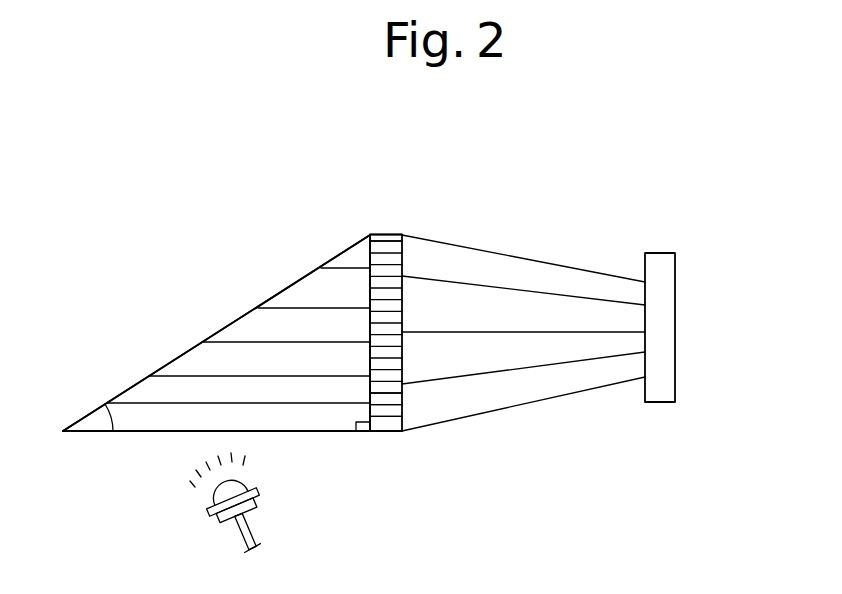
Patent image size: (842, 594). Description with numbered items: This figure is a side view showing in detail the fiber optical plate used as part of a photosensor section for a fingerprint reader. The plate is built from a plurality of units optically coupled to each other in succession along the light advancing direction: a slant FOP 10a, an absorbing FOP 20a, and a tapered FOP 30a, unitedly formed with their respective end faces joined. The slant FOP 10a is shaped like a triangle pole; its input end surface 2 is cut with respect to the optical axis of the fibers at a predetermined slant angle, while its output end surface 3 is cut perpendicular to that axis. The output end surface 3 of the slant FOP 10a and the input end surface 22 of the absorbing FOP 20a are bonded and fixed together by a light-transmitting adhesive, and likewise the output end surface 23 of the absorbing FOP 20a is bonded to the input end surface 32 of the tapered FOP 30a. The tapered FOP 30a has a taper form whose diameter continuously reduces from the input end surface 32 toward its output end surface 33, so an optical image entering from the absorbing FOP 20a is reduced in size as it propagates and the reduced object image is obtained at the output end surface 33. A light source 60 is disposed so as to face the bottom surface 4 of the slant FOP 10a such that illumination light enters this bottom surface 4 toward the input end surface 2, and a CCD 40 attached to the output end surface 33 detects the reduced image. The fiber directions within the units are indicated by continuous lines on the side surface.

The input end surface 2 is at (208, 338).
The slant FOP 10a is at (246, 327).
The output end surface 3 is at (367, 285).
The input end surface 22 is at (380, 236).
The output end surface 23 is at (388, 236).
The input end surface 32 is at (402, 398).
The absorbing FOP 20a is at (385, 428).
The output end surface 33 is at (645, 284).
The tapered FOP 30a is at (545, 385).
The CCD 40 is at (665, 258).
The bottom surface 4 is at (278, 435).
The light source 60 is at (188, 510).